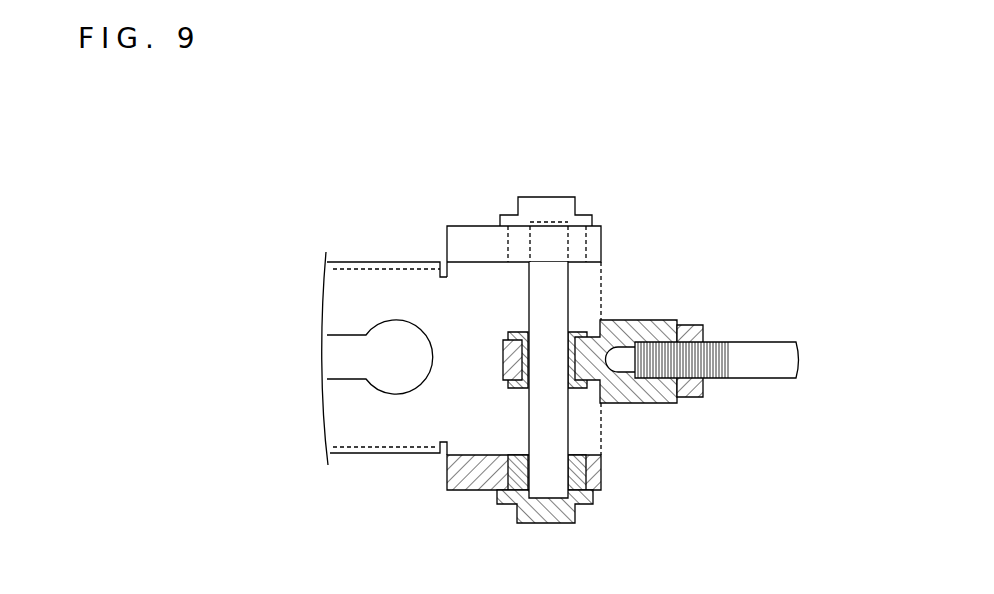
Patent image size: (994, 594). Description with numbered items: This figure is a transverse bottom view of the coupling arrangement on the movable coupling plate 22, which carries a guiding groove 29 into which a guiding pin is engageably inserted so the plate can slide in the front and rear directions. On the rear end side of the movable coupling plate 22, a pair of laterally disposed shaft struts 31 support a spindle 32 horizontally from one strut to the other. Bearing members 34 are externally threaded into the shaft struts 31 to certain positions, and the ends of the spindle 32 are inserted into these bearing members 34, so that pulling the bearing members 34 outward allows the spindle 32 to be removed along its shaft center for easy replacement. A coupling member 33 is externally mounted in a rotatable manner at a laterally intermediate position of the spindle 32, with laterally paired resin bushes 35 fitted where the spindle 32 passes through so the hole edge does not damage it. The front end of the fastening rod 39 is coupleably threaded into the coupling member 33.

The movable coupling plate 22 is at (364, 282).
The guiding groove 29 is at (393, 375).
The shaft struts 31 is at (481, 226).
The spindle 32 is at (568, 297).
The coupling member 33 is at (648, 403).
The bearing members 34 is at (576, 208).
The bushes 35 is at (521, 332).
The fastening rod 39 is at (753, 378).